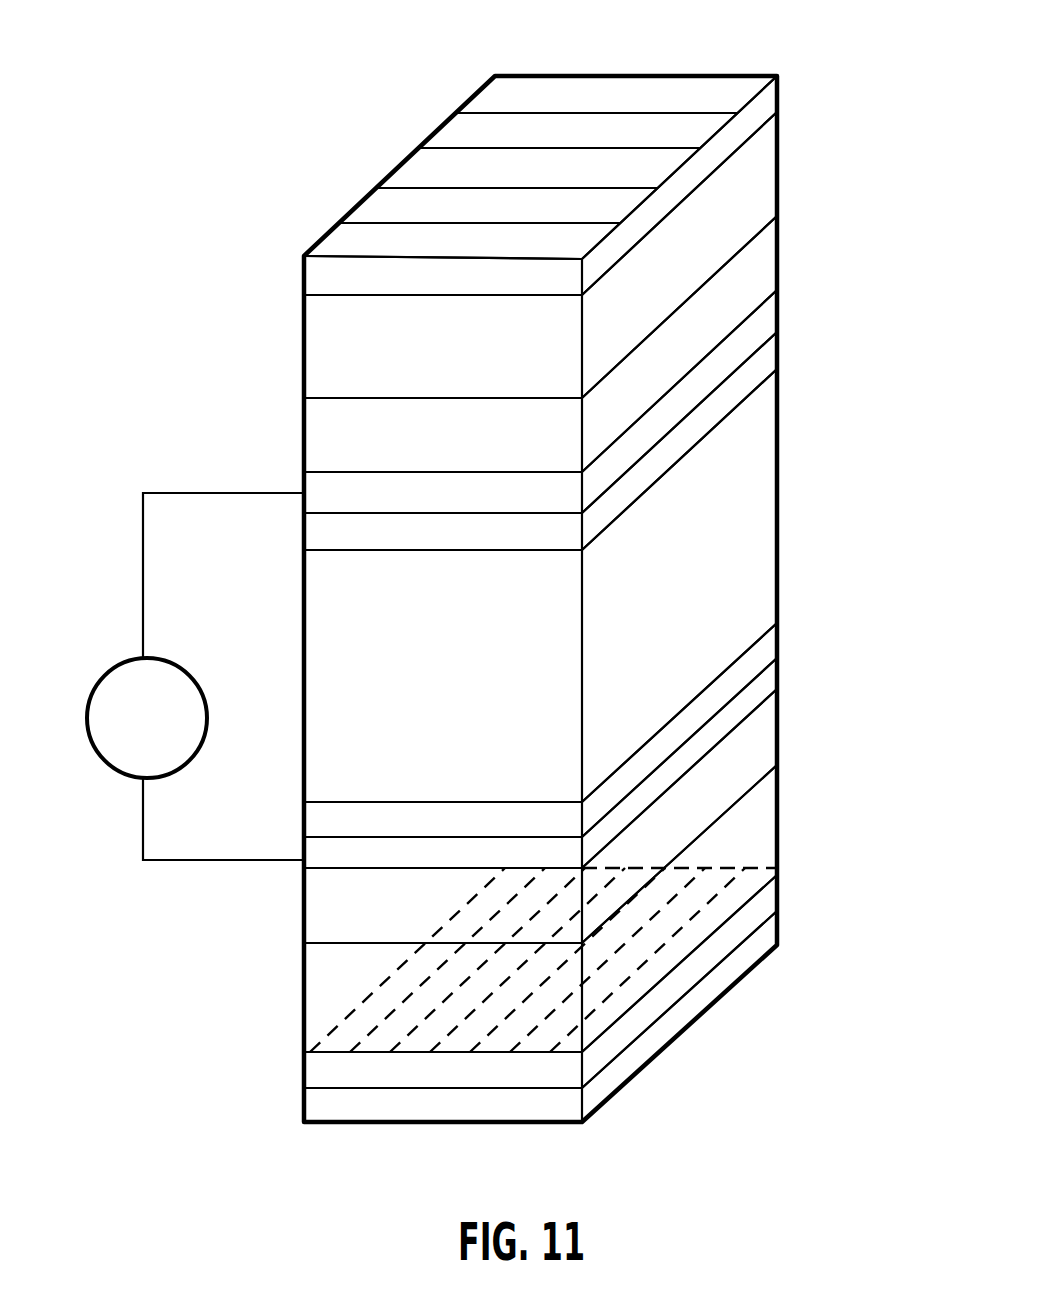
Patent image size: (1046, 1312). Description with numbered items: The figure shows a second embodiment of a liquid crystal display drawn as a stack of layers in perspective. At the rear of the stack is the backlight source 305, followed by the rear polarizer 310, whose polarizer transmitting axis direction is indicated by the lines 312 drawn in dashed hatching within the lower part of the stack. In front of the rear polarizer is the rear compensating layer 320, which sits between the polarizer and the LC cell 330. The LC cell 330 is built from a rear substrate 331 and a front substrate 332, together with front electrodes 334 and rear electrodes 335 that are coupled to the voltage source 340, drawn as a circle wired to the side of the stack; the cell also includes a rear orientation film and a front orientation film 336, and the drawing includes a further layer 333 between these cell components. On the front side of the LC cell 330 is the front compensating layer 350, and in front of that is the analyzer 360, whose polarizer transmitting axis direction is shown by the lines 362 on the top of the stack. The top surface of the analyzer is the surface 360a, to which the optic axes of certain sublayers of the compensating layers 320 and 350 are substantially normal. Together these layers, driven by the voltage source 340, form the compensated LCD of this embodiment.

The backlight source 305 is at (777, 930).
The rear polarizer 310 is at (777, 898).
The lines 312 is at (657, 948).
The rear compensating layer 320 is at (777, 825).
The LC cell 330 is at (777, 492).
The rear substrate 331 is at (777, 733).
The front substrate 332 is at (777, 257).
The layer 333 is at (777, 682).
The front electrodes 334 is at (777, 320).
The rear electrodes 335 is at (777, 638).
The front orientation film 336 is at (777, 362).
The voltage source 340 is at (99, 683).
The front compensating layer 350 is at (777, 175).
The analyzer 360 is at (777, 103).
The surface 360a is at (461, 137).
The lines 362 is at (692, 115).